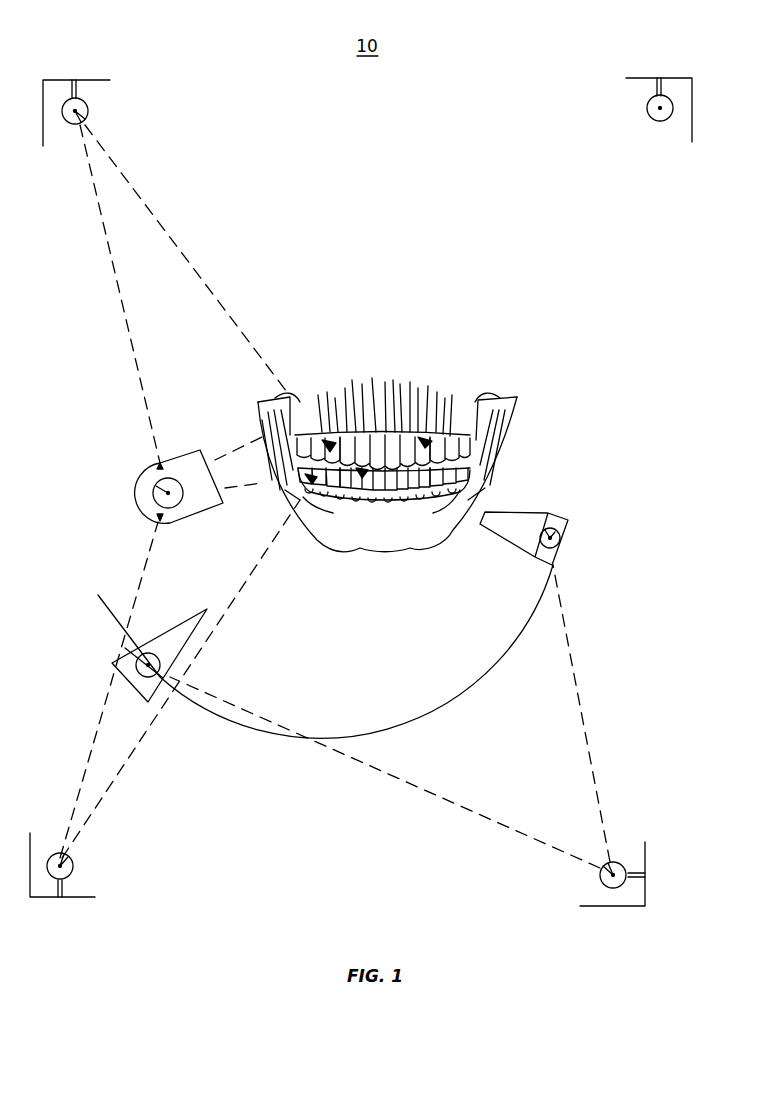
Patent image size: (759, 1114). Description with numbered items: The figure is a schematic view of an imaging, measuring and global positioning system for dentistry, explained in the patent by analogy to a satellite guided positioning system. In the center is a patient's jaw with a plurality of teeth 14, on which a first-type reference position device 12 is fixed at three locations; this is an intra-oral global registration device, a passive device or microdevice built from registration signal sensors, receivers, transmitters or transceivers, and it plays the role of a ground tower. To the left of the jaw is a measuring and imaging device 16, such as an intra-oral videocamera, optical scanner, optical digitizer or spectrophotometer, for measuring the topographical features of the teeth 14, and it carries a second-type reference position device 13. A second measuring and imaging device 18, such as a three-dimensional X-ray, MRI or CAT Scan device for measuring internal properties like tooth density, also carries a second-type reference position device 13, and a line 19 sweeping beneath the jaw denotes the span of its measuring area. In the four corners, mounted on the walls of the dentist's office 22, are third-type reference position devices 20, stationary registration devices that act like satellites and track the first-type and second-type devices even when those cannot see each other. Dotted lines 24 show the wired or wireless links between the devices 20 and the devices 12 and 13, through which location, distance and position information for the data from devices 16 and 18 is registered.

The Type 1 reference position device 12 is at (377, 430).
The Type 2 reference position device 13 is at (160, 493).
The teeth 14 is at (328, 449).
The measuring and imaging device 16 is at (140, 508).
The second measuring and imaging device 18 is at (515, 520).
The line 19 is at (103, 607).
The Type 3 reference position device 20 is at (87, 107).
The dentist's office 22 is at (78, 80).
The dotted lines 24 is at (93, 193).